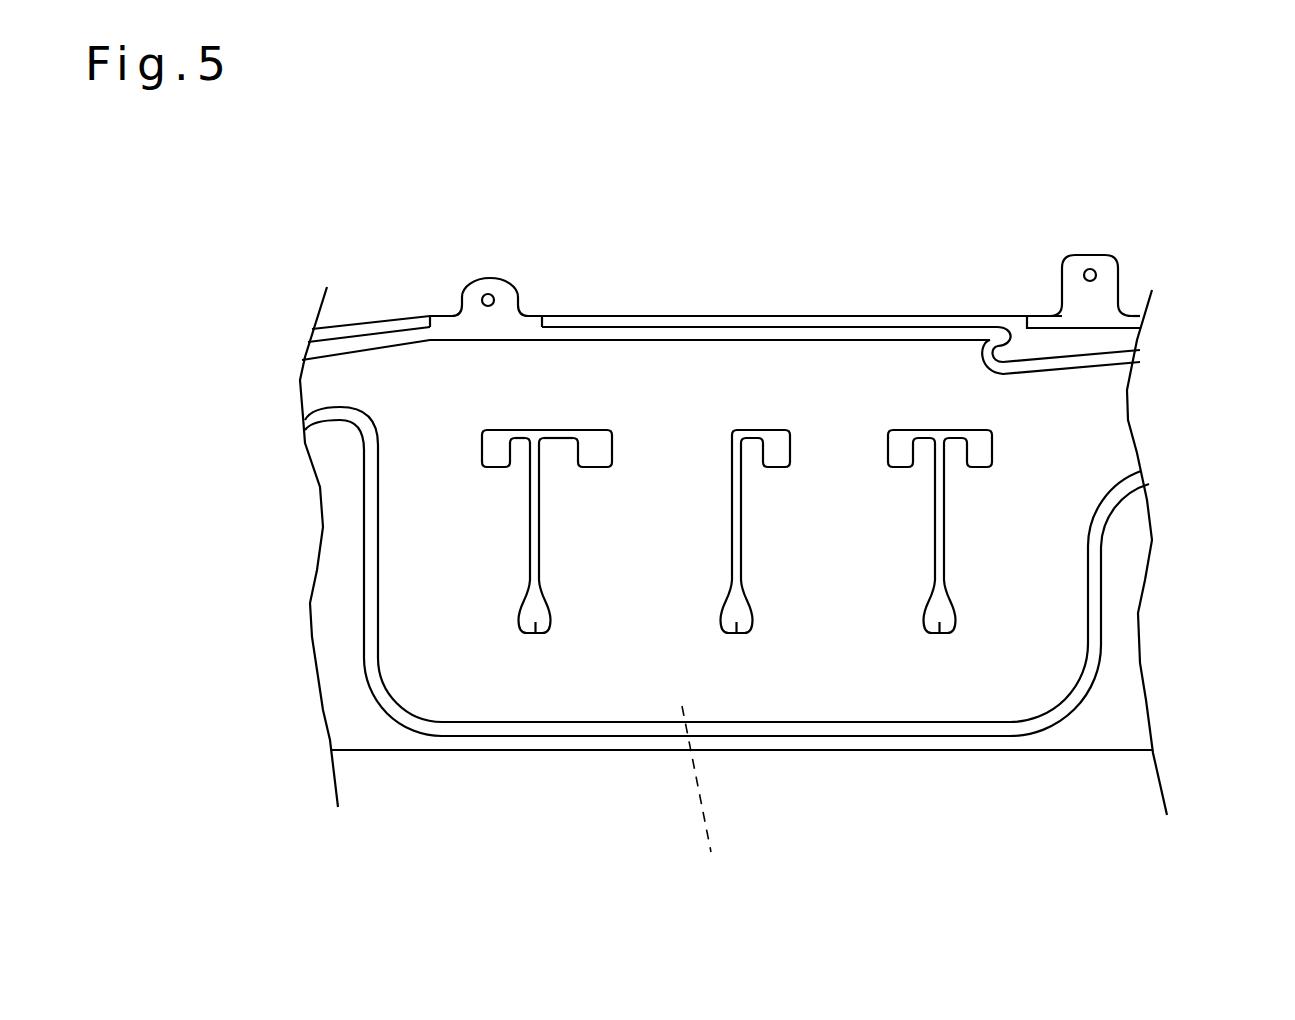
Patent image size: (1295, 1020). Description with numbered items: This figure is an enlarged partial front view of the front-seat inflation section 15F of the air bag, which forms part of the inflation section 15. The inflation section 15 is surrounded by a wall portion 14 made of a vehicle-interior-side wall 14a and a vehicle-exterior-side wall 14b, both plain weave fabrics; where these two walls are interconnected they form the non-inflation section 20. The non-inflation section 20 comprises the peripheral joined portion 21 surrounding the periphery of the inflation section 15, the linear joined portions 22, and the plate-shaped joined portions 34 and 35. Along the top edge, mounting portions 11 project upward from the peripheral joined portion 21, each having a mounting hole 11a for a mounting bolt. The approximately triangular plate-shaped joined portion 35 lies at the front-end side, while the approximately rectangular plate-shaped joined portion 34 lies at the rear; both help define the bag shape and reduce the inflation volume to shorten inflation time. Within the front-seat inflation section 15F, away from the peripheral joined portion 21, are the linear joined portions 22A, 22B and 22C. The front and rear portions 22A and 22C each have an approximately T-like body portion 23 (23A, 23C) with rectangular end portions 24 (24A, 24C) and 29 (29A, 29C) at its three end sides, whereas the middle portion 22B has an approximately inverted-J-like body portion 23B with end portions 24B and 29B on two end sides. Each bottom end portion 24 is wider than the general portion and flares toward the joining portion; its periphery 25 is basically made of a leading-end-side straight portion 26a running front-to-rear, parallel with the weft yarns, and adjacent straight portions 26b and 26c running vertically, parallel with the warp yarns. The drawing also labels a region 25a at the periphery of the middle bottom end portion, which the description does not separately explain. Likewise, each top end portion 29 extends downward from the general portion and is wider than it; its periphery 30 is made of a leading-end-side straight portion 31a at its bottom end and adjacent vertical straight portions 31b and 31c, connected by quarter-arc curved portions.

The mounting portion 11 is at (482, 280).
The mounting hole 11a is at (488, 293).
The wall portion 14 is at (726, 821).
The vehicle-interior-side wall 14a is at (620, 710).
The vehicle-exterior-side wall 14b is at (846, 794).
The inflation section 15 is at (739, 781).
The front-seat inflation section 15F is at (443, 700).
The non-inflation section 20 is at (712, 283).
The peripheral joined portion 21 is at (341, 342).
The linear joined portion 22 is at (852, 432).
The linear joined portion 22A is at (550, 374).
The linear joined portion 22B is at (715, 407).
The linear joined portion 22C is at (971, 528).
The body portion 23 is at (556, 551).
The body portion 23A is at (530, 540).
The body portion 23B is at (730, 510).
The body portion 23C is at (937, 523).
The bottom end portion 24 is at (735, 765).
The bottom end portion 24A is at (536, 637).
The bottom end portion 24B is at (737, 636).
The bottom end portion 24C is at (940, 635).
The periphery 25 is at (731, 753).
The slit of second bulb 25a is at (740, 636).
The leading-end-side straight portion 26a is at (525, 634).
The adjacent straight portion 26b is at (519, 622).
The adjacent straight portion 26c is at (550, 629).
The top end portion 29 is at (701, 316).
The top end portion 29A is at (603, 443).
The top end portion 29B is at (790, 462).
The top end portion 29C is at (980, 452).
The periphery 30 is at (725, 519).
The leading-end-side straight portion 31a is at (513, 460).
The adjacent straight portion 31b is at (490, 455).
The adjacent straight portion 31c is at (528, 462).
The plate-shaped joined portion 34 is at (1133, 523).
The plate-shaped joined portion 35 is at (327, 445).